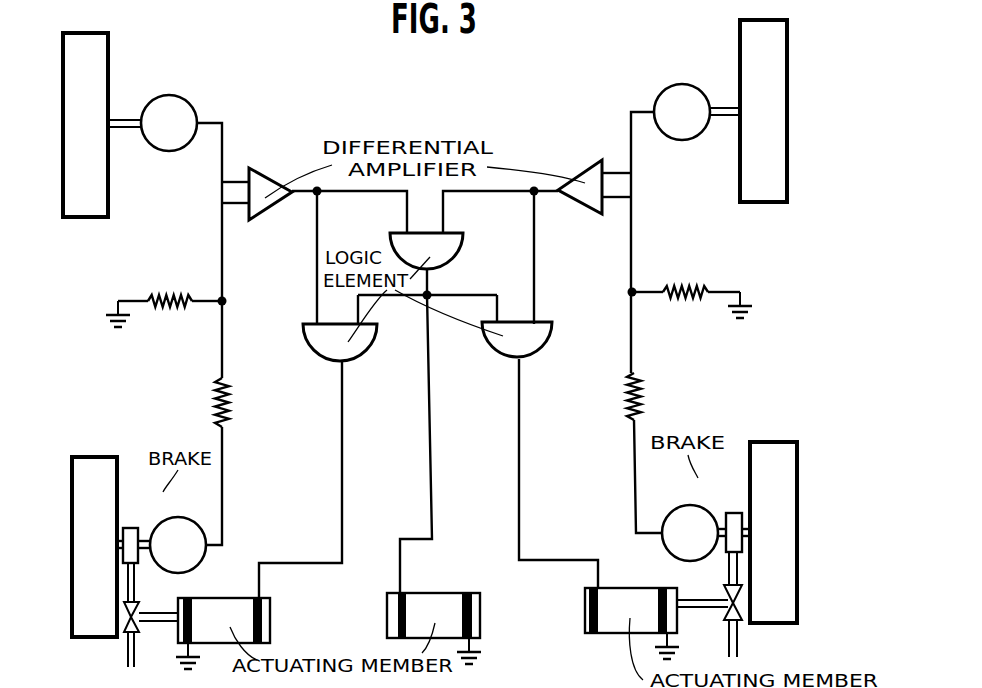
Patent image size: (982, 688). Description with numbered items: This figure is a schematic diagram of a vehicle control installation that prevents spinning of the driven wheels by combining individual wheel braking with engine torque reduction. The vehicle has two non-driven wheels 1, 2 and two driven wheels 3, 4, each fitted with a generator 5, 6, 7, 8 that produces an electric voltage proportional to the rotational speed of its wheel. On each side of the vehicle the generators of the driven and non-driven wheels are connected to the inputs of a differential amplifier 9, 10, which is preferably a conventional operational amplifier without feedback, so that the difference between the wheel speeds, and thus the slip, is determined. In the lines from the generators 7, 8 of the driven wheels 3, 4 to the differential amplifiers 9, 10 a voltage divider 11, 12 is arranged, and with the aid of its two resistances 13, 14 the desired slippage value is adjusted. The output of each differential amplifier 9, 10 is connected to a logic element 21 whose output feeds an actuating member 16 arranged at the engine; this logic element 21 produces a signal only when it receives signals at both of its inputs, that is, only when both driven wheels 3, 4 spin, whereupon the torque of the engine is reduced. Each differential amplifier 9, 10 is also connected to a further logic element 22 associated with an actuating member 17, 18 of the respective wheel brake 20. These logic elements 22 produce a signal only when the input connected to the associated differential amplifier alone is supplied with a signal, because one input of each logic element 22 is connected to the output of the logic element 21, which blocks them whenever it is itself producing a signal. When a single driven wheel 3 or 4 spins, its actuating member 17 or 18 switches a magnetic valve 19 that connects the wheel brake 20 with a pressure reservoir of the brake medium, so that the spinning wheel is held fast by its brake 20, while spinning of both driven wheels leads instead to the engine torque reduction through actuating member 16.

The non-driven wheel 1 is at (108, 62).
The non-driven wheel 2 is at (740, 50).
The driven wheel 3 is at (118, 471).
The driven wheel 4 is at (797, 455).
The generator 5 is at (181, 97).
The generator 6 is at (664, 88).
The generator 7 is at (193, 519).
The generator 8 is at (683, 506).
The differential amplifier 9 is at (268, 195).
The differential amplifier 10 is at (578, 180).
The voltage divider 11 is at (197, 348).
The voltage divider 12 is at (667, 333).
The resistance 13 is at (232, 403).
The resistance 14 is at (177, 291).
The actuating member 16 is at (459, 590).
The actuating member 17 is at (271, 609).
The actuating member 18 is at (640, 588).
The magnetic valve 19 is at (140, 607).
The wheel brake 20 is at (132, 528).
The logic element 21 is at (461, 249).
The logic element 22 is at (304, 340).